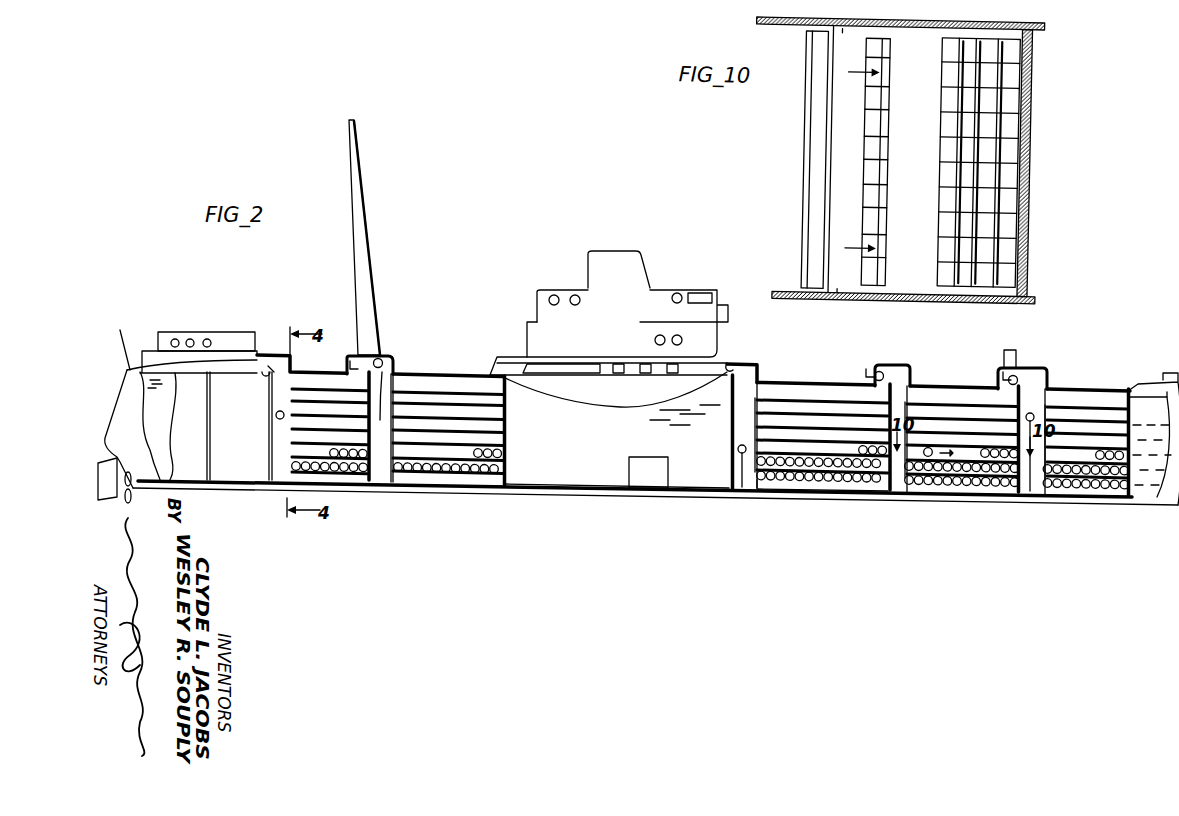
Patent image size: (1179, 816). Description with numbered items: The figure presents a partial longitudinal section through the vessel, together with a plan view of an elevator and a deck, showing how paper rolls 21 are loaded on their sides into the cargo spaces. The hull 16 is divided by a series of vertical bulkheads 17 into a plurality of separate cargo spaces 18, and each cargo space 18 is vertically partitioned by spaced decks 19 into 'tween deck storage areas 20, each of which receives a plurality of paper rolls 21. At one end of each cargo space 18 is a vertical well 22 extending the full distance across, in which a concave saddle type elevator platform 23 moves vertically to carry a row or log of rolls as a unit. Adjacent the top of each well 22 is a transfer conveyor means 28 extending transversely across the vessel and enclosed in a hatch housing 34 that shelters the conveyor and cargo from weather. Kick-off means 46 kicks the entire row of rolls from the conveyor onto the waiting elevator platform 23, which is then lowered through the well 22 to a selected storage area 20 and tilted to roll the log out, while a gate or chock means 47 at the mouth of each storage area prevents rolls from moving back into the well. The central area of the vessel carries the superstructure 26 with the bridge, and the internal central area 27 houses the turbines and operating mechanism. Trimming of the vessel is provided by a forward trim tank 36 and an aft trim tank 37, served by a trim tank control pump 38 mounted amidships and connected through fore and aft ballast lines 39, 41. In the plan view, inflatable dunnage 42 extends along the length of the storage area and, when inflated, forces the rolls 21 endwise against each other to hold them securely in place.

In FIG. 2, the hull 16 is at (1135, 497).
In FIG. 2, the vertical bulkheads 17 is at (372, 470).
In FIG. 10, the vertical bulkheads 17 is at (1027, 163).
In FIG. 2, the cargo spaces 18 is at (307, 384).
In FIG. 2, the spaced decks 19 is at (294, 414).
In FIG. 10, the spaced decks 19 is at (862, 158).
In FIG. 2, the 'tween deck storage areas 20 is at (493, 440).
In FIG. 2, the paper rolls 21 is at (270, 410).
In FIG. 10, the paper rolls 21 is at (887, 123).
In FIG. 2, the vertical well 22 is at (282, 383).
In FIG. 2, the elevator platform 23 is at (278, 422).
In FIG. 10, the elevator platform 23 is at (810, 148).
In FIG. 2, the superstructure 26 is at (543, 290).
In FIG. 2, the internal central area 27 is at (622, 440).
In FIG. 2, the transfer conveyor means 28 is at (268, 375).
In FIG. 2, the hatch housing 34 is at (382, 356).
In FIG. 2, the forward trim tank 36 is at (1143, 410).
In FIG. 2, the aft trim tank 37 is at (183, 388).
In FIG. 2, the trim tank control pump 38 is at (645, 460).
In FIG. 2, the fore ballast line 39 is at (805, 498).
In FIG. 2, the aft ballast line 41 is at (580, 483).
In FIG. 10, the dunnage 42 is at (913, 30).
In FIG. 2, the kick-off means 46 is at (258, 362).
In FIG. 2, the gate or chock means 47 is at (752, 480).